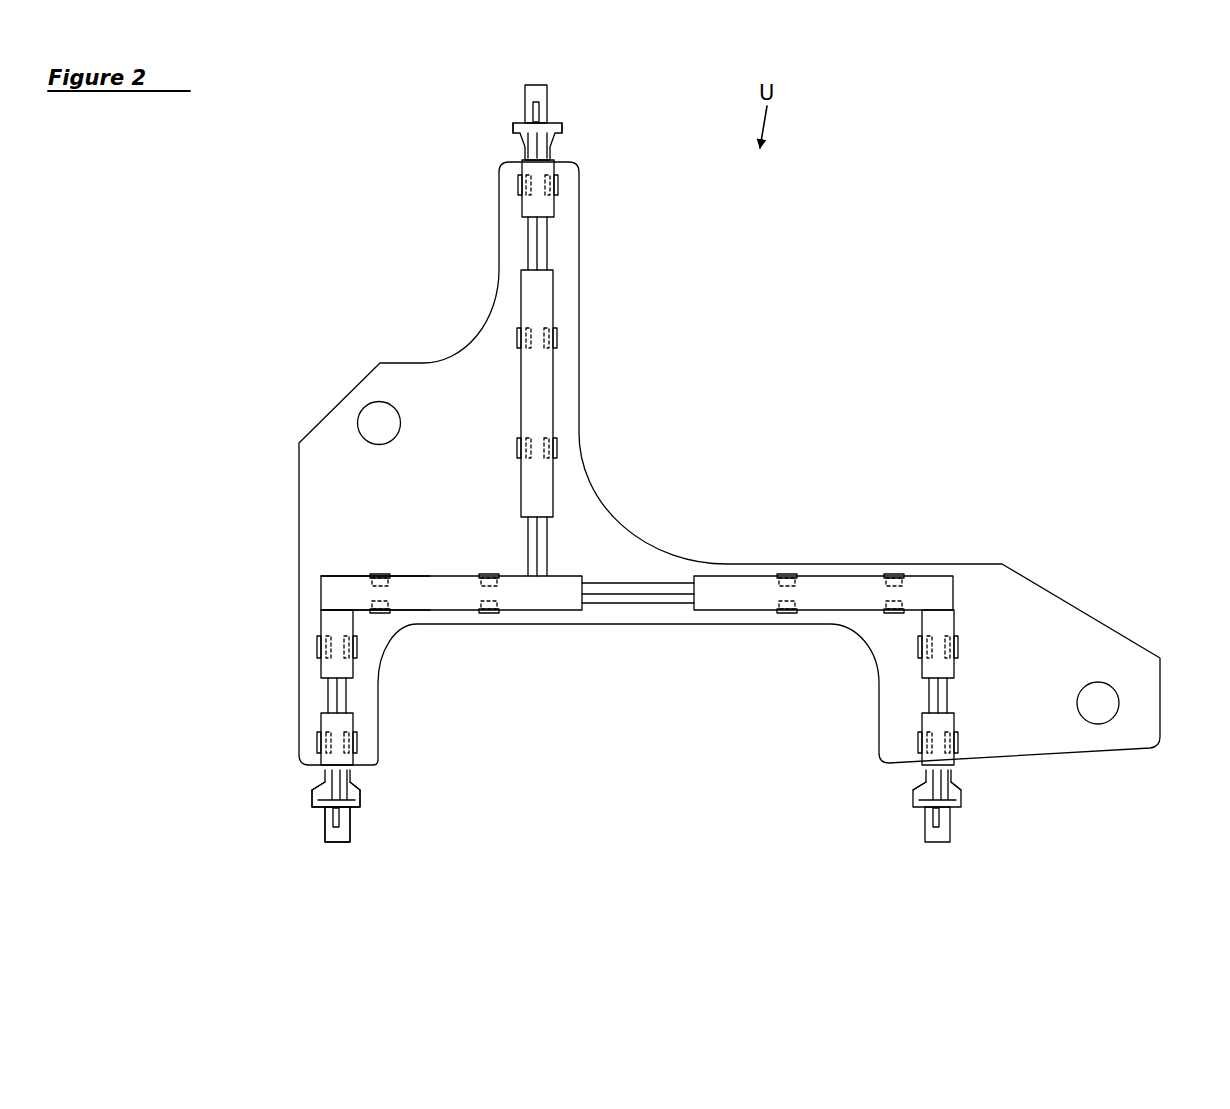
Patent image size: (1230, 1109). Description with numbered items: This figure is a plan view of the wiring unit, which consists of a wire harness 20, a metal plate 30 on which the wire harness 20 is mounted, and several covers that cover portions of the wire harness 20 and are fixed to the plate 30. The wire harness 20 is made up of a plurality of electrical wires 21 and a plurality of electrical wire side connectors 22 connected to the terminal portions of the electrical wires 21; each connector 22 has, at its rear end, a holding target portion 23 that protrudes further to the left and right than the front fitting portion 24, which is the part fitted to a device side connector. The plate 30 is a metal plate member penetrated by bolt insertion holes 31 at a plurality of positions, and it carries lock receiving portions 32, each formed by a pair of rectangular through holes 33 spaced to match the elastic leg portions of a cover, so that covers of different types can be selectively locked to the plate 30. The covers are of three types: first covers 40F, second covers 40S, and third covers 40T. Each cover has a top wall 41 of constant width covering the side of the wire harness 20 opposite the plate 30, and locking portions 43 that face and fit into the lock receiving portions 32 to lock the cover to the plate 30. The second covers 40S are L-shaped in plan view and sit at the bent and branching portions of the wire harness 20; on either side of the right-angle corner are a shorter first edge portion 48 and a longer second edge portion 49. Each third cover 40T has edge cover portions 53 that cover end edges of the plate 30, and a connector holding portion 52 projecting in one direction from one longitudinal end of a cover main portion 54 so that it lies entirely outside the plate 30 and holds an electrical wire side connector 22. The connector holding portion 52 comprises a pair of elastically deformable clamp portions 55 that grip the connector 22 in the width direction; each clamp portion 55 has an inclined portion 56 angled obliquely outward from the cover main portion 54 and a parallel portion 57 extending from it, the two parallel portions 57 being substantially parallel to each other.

The wire harness 20 is at (604, 482).
The electrical wire 21 is at (680, 602).
The electrical wire side connector 22 is at (540, 88).
The holding target portion 23 is at (353, 798).
The fitting portion 24 is at (325, 833).
The plate 30 is at (427, 385).
The bolt insertion hole 31 is at (367, 407).
The lock receiving portion 32 is at (938, 625).
The through hole 33 is at (480, 610).
The first cover 40F is at (548, 308).
The second cover 40S is at (428, 595).
The third cover 40T is at (540, 178).
The top wall 41 is at (540, 371).
The locking portion 43 is at (778, 583).
The first edge portion 48 is at (333, 627).
The second edge portion 49 is at (408, 580).
The connector holding portion 52 is at (513, 127).
The edge cover portion 53 is at (945, 773).
The cover main portion 54 is at (945, 723).
The clamp portion 55 is at (560, 125).
The inclined portion 56 is at (317, 783).
The parallel portion 57 is at (313, 797).